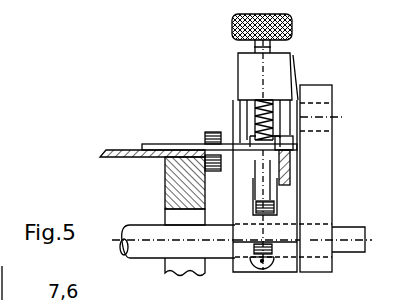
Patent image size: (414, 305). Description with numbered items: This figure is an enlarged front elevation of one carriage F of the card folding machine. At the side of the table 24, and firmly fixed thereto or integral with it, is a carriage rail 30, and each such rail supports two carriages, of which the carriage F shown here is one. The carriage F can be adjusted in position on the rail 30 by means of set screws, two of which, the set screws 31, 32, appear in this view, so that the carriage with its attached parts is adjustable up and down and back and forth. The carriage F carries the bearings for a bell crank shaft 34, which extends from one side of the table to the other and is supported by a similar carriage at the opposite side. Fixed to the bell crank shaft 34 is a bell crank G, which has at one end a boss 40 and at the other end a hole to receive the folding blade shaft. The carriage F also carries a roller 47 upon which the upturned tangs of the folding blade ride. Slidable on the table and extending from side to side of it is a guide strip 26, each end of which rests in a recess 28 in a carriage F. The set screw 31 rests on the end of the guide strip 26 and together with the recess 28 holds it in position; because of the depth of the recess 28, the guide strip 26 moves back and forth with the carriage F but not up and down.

The set screw 31 is at (232, 28).
The carriage F is at (256, 72).
The recess 28 is at (280, 137).
The table 24 is at (100, 152).
The guide strip 26 is at (155, 148).
The roller 47 is at (207, 141).
The bell crank shaft 34 is at (163, 231).
The bell crank G is at (316, 166).
The boss 40 is at (348, 235).
The carriage rail 30 is at (262, 176).
The set screw 32 is at (262, 259).